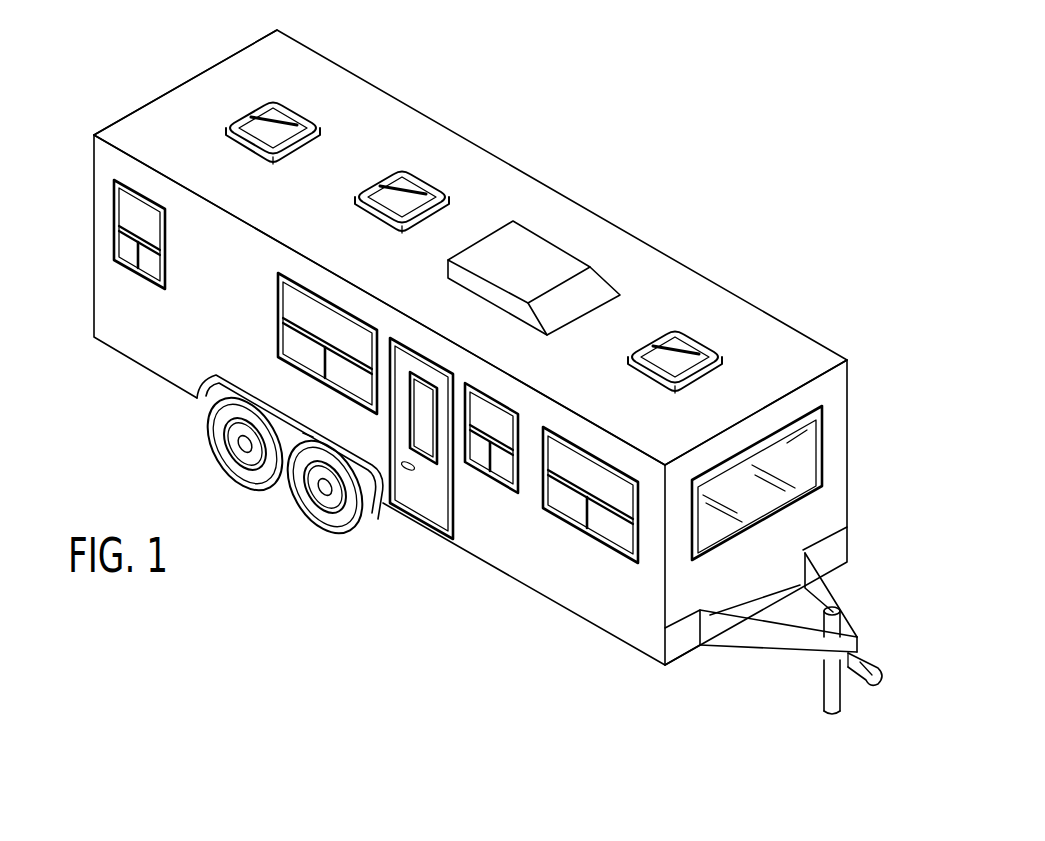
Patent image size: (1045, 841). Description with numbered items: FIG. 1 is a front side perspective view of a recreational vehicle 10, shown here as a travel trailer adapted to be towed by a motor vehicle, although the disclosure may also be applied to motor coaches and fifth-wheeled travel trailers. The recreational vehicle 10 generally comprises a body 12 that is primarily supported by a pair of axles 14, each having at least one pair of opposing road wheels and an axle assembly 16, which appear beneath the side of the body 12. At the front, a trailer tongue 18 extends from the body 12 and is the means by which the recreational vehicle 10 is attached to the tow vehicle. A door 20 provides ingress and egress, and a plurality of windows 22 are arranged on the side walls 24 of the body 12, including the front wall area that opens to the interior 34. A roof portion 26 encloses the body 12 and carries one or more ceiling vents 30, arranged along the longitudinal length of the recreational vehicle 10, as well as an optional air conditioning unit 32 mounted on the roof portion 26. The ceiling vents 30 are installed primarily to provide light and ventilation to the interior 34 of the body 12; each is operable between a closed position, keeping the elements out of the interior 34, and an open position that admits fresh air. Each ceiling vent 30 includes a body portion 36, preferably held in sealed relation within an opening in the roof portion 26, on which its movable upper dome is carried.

The recreational vehicle travel trailer 10 is at (718, 185).
The body 12 is at (502, 347).
The axles 14 is at (276, 475).
The axle assembly 16 is at (213, 418).
The trailer tongue 18 is at (822, 598).
The door 20 is at (433, 500).
The windows 22 is at (130, 275).
The side walls 24 is at (140, 343).
The roof portion 26 is at (660, 288).
The ceiling vents 30 is at (290, 110).
The air conditioning unit 32 is at (542, 248).
The interior 34 is at (822, 420).
The body portion 36 is at (170, 130).